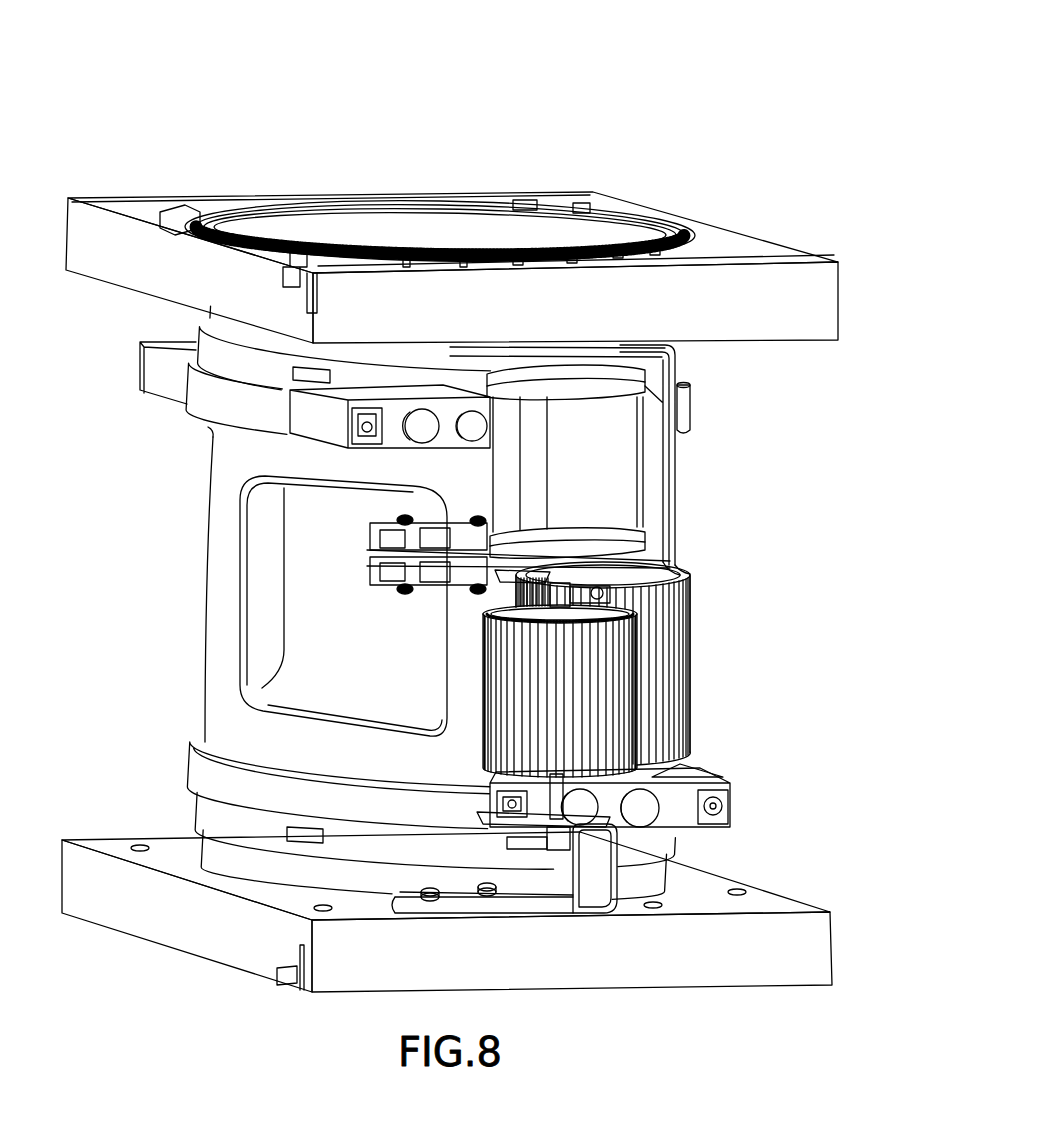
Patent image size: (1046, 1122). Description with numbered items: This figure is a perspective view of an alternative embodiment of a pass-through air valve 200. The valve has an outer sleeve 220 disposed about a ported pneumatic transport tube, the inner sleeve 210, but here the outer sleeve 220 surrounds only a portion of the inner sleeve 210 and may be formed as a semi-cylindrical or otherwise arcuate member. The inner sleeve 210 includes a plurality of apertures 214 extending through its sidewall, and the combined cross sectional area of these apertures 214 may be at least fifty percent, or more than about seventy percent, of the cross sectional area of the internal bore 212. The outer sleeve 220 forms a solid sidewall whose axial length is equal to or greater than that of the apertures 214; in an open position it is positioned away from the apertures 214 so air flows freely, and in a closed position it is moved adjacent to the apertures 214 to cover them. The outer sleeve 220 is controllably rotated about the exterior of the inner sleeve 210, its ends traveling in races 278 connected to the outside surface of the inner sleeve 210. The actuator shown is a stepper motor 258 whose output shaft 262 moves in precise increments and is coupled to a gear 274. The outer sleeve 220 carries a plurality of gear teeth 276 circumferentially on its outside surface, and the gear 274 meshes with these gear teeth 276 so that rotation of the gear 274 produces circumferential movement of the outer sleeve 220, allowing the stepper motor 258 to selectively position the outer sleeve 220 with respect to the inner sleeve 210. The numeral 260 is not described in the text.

The pass-through air valve 200 is at (782, 172).
The bore 212 is at (448, 230).
The races 278 is at (205, 407).
The inner sleeve 210 is at (230, 727).
The apertures 214 is at (263, 557).
The stepper motor 258 is at (593, 390).
The motor 260 is at (650, 463).
The outer sleeve 220 is at (647, 572).
The output shaft 262 is at (583, 593).
The gear 274 is at (600, 710).
The gear teeth 276 is at (673, 741).